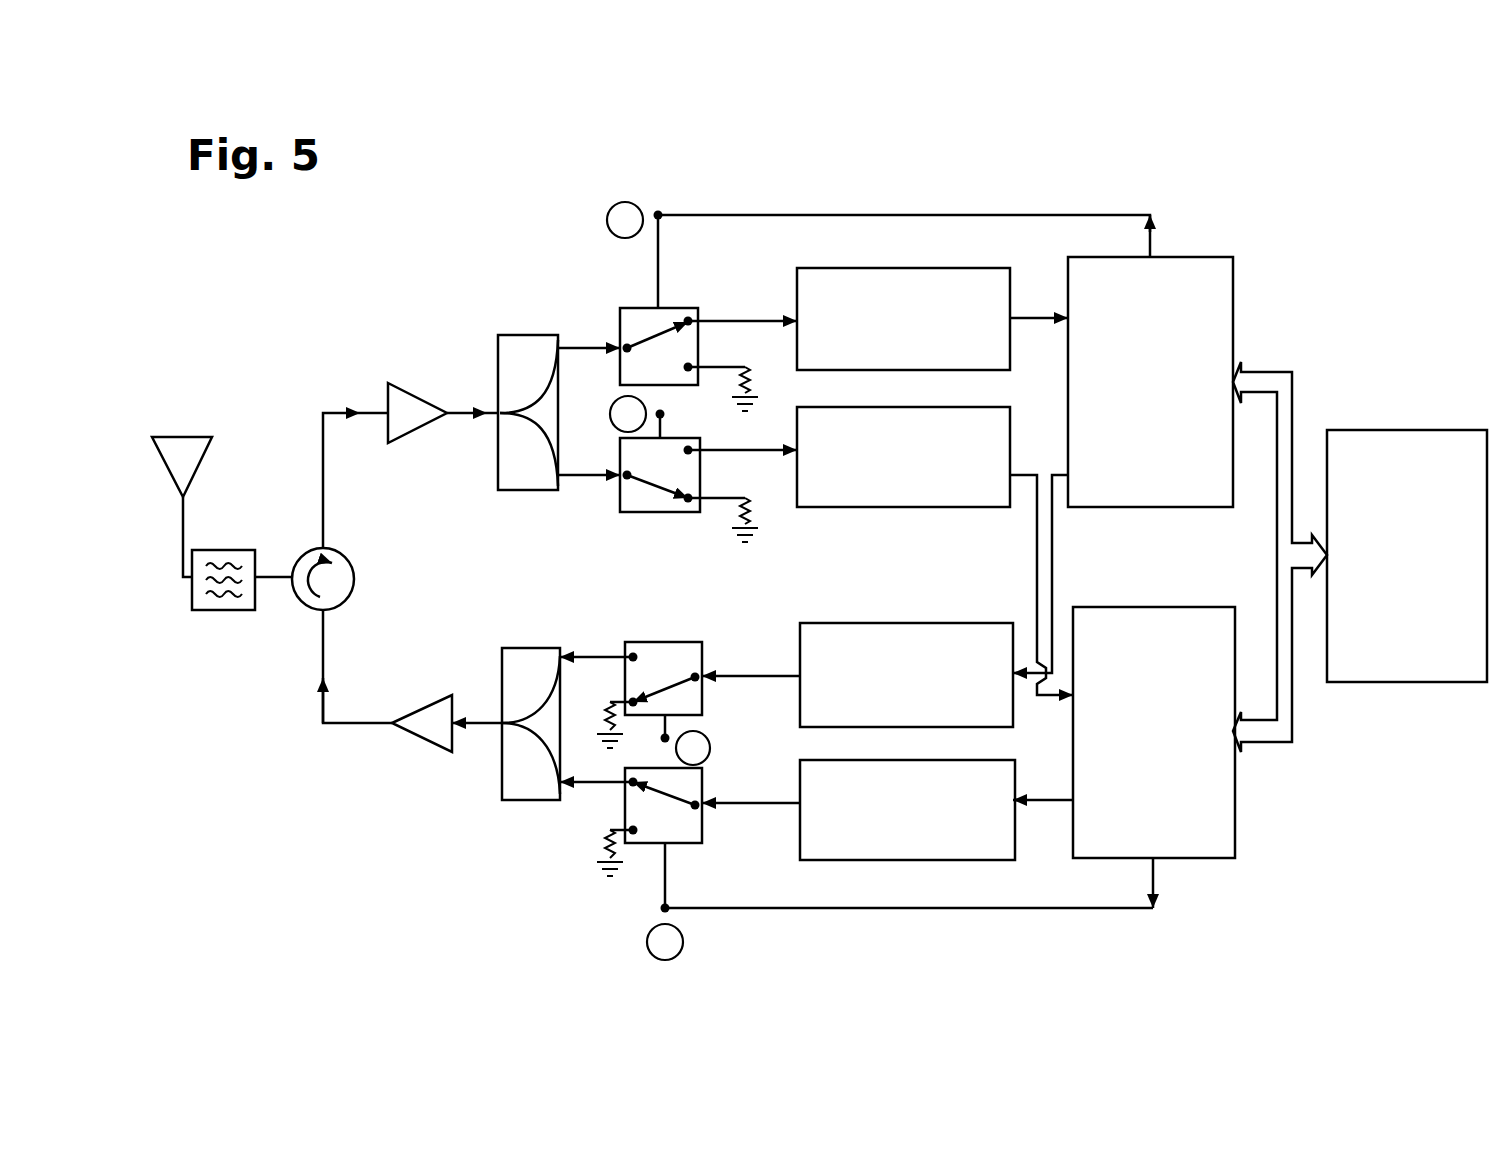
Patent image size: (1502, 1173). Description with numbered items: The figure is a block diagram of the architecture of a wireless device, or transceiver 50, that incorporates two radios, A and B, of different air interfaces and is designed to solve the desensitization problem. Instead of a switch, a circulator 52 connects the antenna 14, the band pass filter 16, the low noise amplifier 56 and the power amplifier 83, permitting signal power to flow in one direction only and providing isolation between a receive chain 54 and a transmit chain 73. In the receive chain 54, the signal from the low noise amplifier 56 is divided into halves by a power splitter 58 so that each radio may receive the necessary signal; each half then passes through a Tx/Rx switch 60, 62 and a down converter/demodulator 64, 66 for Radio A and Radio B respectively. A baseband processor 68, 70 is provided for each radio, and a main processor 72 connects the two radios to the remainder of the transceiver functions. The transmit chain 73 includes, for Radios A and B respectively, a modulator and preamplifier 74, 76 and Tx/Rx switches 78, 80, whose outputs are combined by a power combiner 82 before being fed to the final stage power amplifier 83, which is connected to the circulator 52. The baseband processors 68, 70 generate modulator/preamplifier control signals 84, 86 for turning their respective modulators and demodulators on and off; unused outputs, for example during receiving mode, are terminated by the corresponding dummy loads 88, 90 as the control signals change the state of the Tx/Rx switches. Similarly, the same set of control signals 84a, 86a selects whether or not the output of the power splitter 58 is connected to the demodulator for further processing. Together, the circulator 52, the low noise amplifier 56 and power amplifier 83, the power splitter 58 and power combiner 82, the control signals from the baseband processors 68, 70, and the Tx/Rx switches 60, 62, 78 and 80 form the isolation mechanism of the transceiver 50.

The antenna 14 is at (180, 433).
The band pass filter 16 is at (258, 572).
The transceiver 50 is at (378, 228).
The circulator 52 is at (344, 554).
The receive chain 54 is at (1228, 205).
The low noise amplifier 56 is at (403, 388).
The power splitter 58 is at (510, 490).
The Tx/Rx switch 60 is at (653, 307).
The Tx/Rx switch 62 is at (620, 460).
The down converter/demodulator 64 is at (952, 266).
The down converter/demodulator 66 is at (952, 407).
The baseband processor 68 is at (1172, 257).
The baseband processor 70 is at (1172, 607).
The main processor 72 is at (1427, 430).
The transmit chain 73 is at (1300, 893).
The modulator and preamplifier 74 is at (953, 623).
The modulator and preamplifier 76 is at (953, 760).
The Tx/Rx switch 78 is at (650, 642).
The Tx/Rx switch 80 is at (703, 826).
The power combiner 82 is at (508, 648).
The power amplifier 83 is at (427, 748).
The modulator/preamplifier control signal 84 is at (1053, 566).
The control signal 84a is at (1103, 214).
The modulator/preamplifier control signal 86 is at (1040, 808).
The control signal 86a is at (1108, 910).
The dummy load 88 is at (668, 733).
The dummy load 90 is at (668, 416).